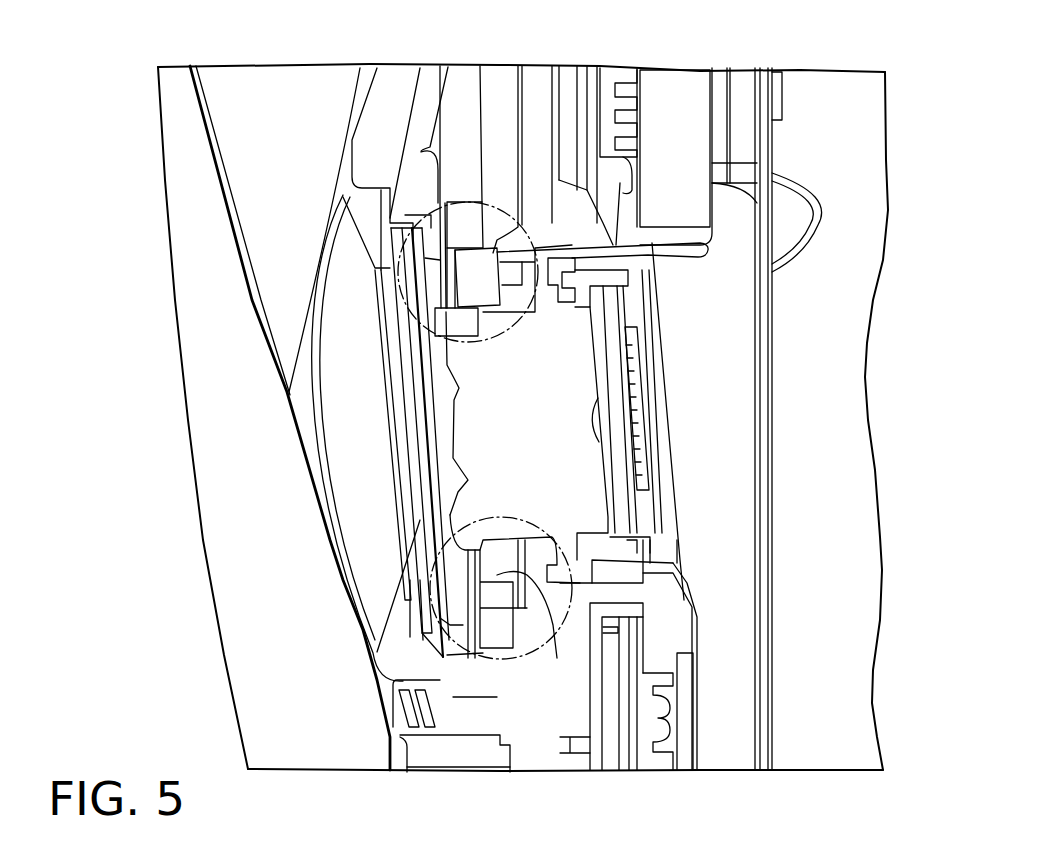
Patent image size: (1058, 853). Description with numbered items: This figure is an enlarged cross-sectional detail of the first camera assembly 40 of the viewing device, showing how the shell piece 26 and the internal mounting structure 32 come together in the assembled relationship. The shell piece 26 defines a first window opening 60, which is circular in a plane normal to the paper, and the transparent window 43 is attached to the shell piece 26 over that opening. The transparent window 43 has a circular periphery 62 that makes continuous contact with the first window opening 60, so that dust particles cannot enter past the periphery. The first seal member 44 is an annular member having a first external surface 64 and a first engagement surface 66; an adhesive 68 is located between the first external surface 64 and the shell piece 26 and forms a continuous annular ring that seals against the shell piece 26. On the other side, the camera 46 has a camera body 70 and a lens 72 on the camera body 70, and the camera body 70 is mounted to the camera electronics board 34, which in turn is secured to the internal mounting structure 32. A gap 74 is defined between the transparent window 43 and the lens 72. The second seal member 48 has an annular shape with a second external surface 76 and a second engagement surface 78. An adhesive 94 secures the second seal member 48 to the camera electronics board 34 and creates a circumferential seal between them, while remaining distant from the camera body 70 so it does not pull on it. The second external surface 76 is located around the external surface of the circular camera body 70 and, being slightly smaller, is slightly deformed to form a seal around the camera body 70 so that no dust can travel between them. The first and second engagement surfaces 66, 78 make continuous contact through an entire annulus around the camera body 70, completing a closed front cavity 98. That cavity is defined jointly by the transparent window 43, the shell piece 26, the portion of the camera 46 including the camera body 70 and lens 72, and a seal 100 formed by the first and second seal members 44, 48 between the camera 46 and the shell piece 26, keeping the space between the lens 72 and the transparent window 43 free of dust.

The first camera assembly 40 is at (142, 48).
The shell piece 26 is at (200, 128).
The internal mounting structure 32 is at (731, 227).
The camera electronics board 34 is at (723, 360).
The transparent window 43 is at (417, 450).
The first seal member 44 is at (448, 630).
The camera 46 is at (537, 343).
The second seal member 48 is at (503, 565).
The first window opening 60 is at (392, 235).
The circular periphery 62 is at (478, 626).
The first external surface 64 is at (492, 638).
The first engagement surface 66 is at (533, 578).
The adhesive 68 is at (430, 215).
The camera body 70 is at (573, 423).
The lens 72 is at (450, 410).
The gap 74 is at (435, 383).
The second external surface 76 is at (481, 315).
The second engagement surface 78 is at (500, 597).
The adhesive 94 is at (705, 249).
The closed front cavity 98 is at (443, 497).
The seal 100 is at (459, 195).